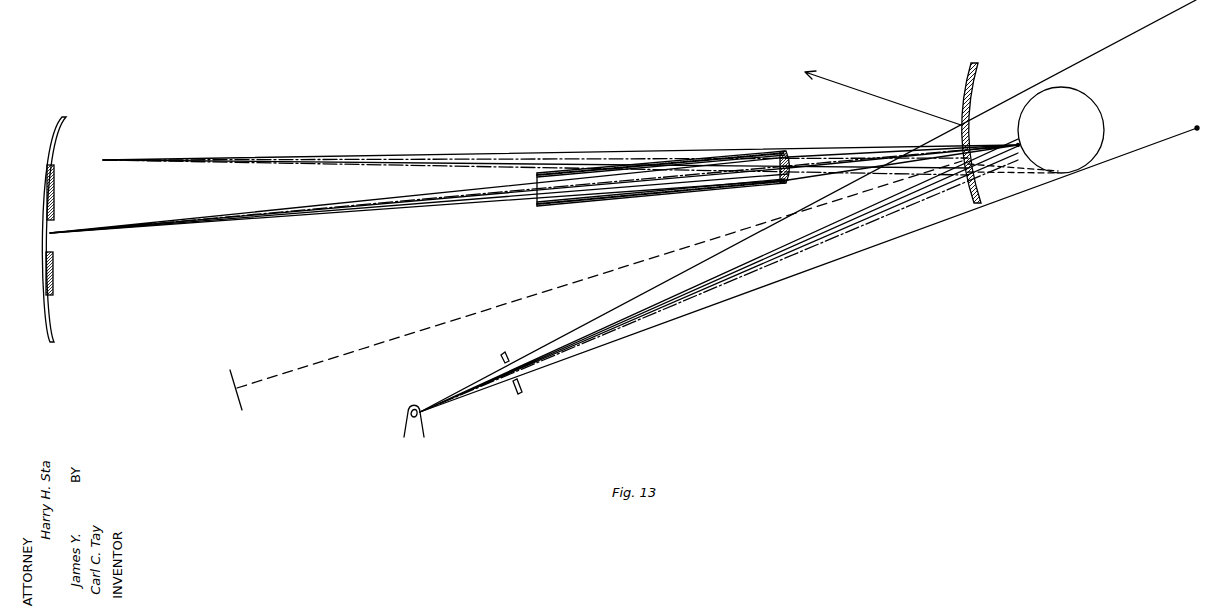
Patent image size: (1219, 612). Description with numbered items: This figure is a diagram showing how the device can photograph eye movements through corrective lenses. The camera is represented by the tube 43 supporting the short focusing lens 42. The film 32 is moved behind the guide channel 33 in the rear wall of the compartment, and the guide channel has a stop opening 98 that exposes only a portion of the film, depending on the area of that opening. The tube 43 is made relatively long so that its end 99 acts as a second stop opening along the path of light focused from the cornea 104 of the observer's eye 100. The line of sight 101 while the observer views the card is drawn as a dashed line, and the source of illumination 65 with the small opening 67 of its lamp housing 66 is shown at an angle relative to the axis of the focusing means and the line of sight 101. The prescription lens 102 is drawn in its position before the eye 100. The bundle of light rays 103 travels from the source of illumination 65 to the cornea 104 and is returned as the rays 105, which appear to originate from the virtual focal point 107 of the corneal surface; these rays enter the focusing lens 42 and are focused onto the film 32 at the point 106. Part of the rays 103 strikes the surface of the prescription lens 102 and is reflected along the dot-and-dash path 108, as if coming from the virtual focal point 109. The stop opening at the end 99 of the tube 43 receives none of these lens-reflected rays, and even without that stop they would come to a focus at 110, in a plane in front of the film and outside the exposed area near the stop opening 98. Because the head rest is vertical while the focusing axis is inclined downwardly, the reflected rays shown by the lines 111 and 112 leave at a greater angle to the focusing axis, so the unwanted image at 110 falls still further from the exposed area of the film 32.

The film 32 is at (64, 122).
The guide channel 33 is at (61, 212).
The focusing lens 42 is at (783, 183).
The tube 43 is at (766, 151).
The source of illumination 65 is at (405, 427).
The lamp housing 66 is at (504, 352).
The small opening 67 is at (498, 362).
The stop opening 98 is at (53, 231).
The end of the tubular member 99 is at (537, 200).
The observer's eye 100 is at (1088, 104).
The line of sight 101 is at (427, 330).
The prescription lens 102 is at (977, 70).
The bundle of light rays 103 is at (690, 293).
The cornea 104 is at (1016, 141).
The reflected light rays 105 is at (850, 152).
The focus on the film 106 is at (51, 236).
The virtual focal point 107 is at (1020, 146).
The reflected ray path 108 is at (823, 153).
The virtual focal point 109 is at (1082, 176).
The focus point 110 is at (103, 160).
The reflected ray line 111 is at (655, 287).
The reflected ray line 112 is at (855, 89).